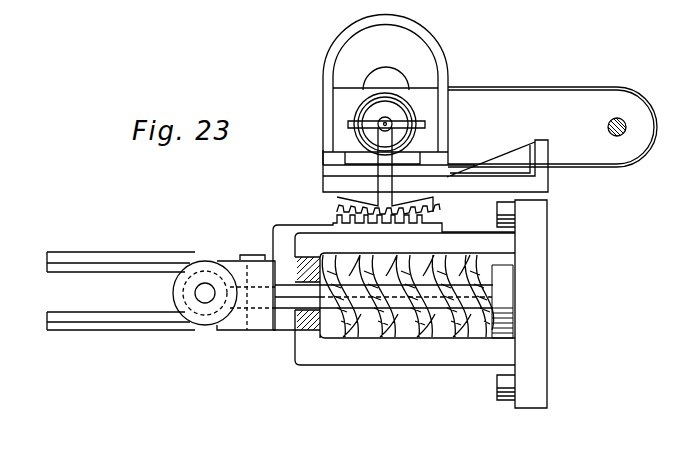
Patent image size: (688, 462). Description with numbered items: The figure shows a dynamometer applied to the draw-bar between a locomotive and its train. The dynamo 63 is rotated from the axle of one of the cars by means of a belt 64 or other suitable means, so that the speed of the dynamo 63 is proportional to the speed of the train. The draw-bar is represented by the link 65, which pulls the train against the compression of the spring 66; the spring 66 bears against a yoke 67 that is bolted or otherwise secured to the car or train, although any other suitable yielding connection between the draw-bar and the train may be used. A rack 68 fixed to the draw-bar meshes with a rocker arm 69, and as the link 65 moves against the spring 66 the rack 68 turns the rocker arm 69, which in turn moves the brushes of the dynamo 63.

The dynamo 63 is at (418, 57).
The belt 64 is at (547, 79).
The link 65 is at (116, 327).
The spring 66 is at (383, 333).
The yoke 67 is at (463, 360).
The rack 68 is at (287, 224).
The rocker arm 69 is at (433, 205).